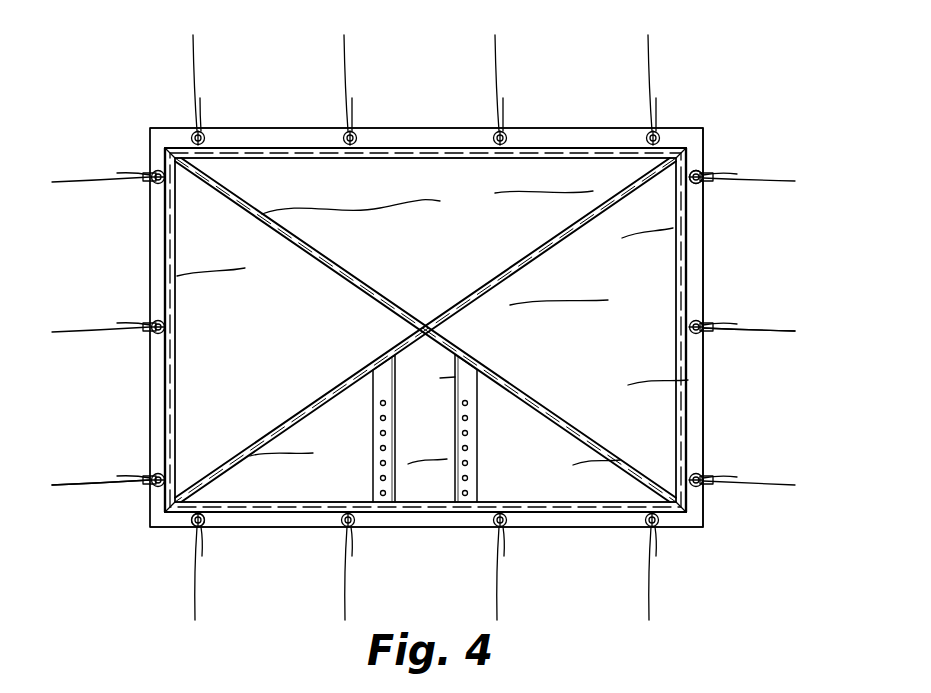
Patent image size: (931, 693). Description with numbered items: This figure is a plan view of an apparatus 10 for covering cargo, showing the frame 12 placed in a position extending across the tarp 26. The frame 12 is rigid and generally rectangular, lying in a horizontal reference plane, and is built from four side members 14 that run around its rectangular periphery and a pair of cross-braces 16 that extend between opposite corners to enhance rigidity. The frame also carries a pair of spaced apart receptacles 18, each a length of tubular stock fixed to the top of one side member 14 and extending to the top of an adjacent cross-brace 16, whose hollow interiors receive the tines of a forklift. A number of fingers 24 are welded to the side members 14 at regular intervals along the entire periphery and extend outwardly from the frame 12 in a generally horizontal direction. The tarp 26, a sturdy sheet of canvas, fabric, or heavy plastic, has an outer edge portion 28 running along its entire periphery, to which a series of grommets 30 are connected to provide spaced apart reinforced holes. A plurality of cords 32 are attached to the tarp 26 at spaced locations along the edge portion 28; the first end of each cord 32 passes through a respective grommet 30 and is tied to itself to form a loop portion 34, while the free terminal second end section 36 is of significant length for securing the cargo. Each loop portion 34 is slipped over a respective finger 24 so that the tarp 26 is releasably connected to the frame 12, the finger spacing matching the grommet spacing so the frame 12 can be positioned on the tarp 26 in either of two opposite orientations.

The apparatus for covering cargo 10 is at (703, 82).
The frame 12 is at (238, 136).
The side members 14 is at (427, 147).
The cross-braces 16 is at (445, 310).
The receptacles 18 is at (396, 484).
The fingers 24 is at (200, 131).
The tarp 26 is at (545, 125).
The outer edge portion 28 is at (700, 440).
The grommets 30 is at (700, 185).
The cords 32 is at (781, 172).
The loop portion 34 is at (152, 478).
The terminal second end section 36 is at (65, 483).